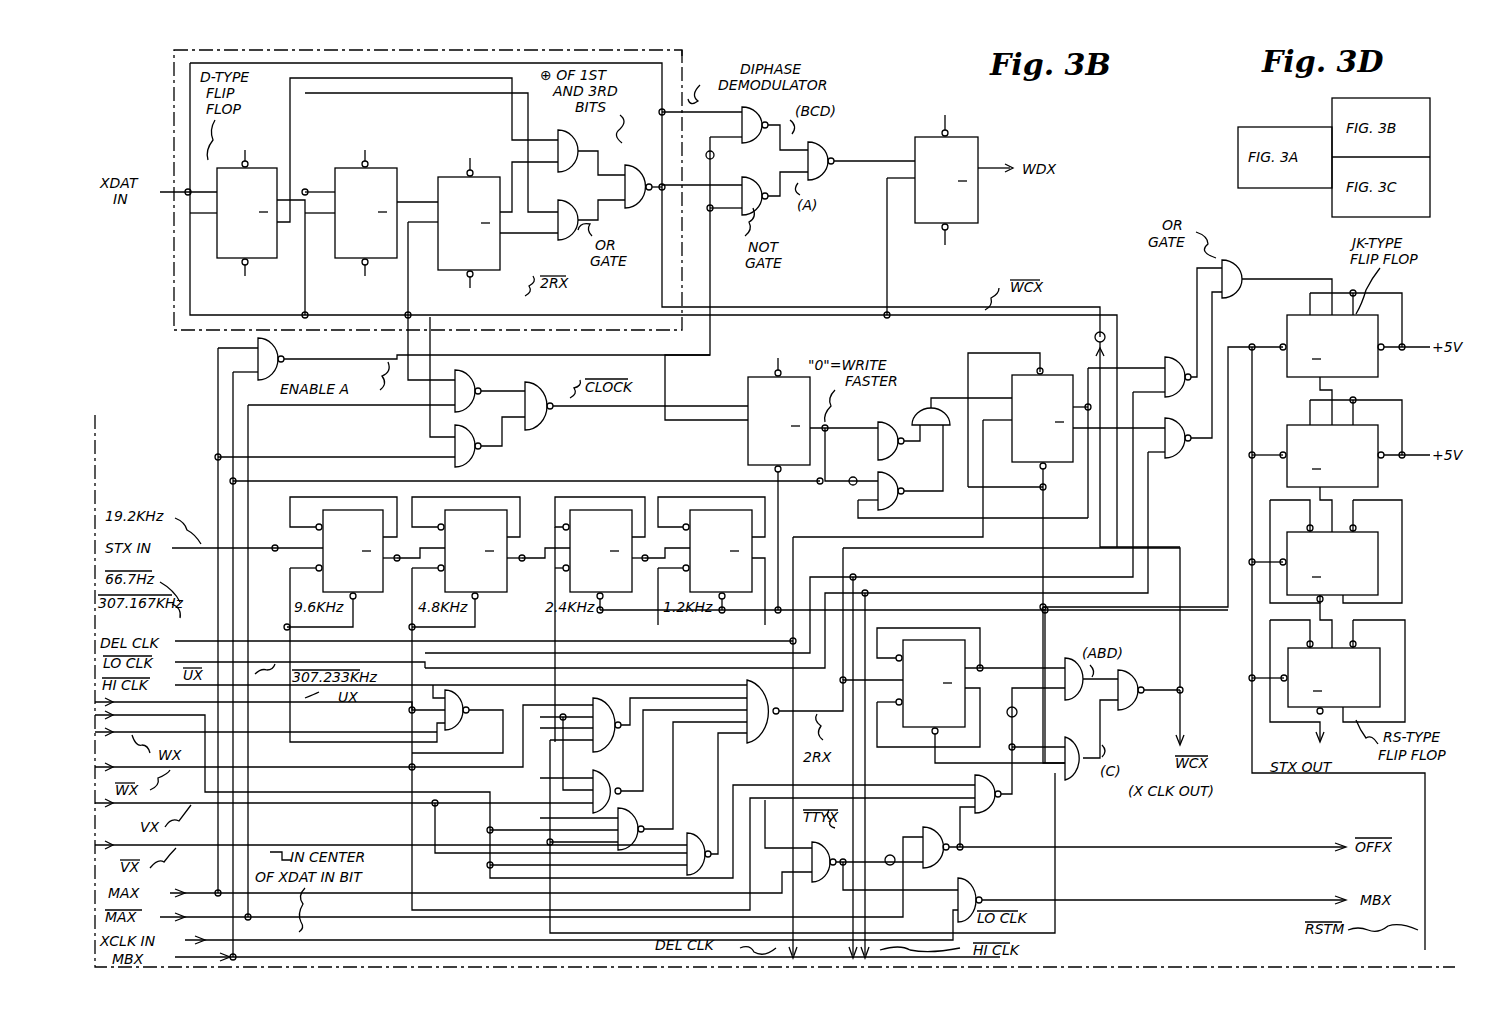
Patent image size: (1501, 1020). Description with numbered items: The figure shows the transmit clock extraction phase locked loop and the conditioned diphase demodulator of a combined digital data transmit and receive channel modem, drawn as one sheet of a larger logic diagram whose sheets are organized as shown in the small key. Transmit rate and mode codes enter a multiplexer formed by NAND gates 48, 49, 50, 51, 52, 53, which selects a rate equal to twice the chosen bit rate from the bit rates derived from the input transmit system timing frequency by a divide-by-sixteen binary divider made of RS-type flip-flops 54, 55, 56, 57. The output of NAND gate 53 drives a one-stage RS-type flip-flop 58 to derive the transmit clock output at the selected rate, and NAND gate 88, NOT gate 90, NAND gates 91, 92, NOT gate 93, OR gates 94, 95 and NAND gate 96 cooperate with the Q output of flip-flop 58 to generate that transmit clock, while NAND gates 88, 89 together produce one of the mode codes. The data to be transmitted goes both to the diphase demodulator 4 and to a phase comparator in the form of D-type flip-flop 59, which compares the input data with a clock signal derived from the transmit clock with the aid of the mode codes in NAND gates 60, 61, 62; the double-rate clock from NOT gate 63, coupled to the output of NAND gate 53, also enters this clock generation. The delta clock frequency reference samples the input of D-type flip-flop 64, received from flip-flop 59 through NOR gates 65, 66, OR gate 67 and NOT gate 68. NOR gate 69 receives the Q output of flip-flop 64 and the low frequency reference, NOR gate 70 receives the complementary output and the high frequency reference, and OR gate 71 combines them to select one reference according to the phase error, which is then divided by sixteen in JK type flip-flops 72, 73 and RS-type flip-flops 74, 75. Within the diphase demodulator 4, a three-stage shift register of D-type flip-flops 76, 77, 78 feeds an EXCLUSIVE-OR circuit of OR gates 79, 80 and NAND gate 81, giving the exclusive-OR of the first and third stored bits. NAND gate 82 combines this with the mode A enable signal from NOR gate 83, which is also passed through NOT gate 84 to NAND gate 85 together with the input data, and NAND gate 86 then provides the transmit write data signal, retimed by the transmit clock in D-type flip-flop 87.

The diphase demodulator 4 is at (682, 64).
The NAND gate 48 is at (458, 724).
The NAND gate 49 is at (614, 736).
The NAND gate 50 is at (608, 784).
The NAND gate 51 is at (628, 818).
The NAND gate 52 is at (694, 833).
The NAND gate 53 is at (764, 740).
The RS-type flip-flop 54 is at (350, 510).
The RS-type flip-flop 55 is at (478, 510).
The RS-type flip-flop 56 is at (595, 510).
The RS-type flip-flop 57 is at (716, 510).
The RS-type flip-flop 58 is at (966, 652).
The D-type flip-flop 59 is at (748, 380).
The NAND gate 60 is at (468, 372).
The NAND gate 61 is at (472, 430).
The NAND gate 62 is at (536, 384).
The NOT gate 63 is at (1094, 340).
The D-type flip-flop 64 is at (1062, 384).
The NOR gate 65 is at (880, 424).
The NOR gate 66 is at (902, 478).
The OR gate 67 is at (918, 414).
The NOT gate 68 is at (848, 484).
The NOR gate 69 is at (1174, 358).
The NOR gate 70 is at (1178, 428).
The OR gate 71 is at (1236, 298).
The JK type flip-flop 72 is at (1384, 362).
The JK type flip-flop 73 is at (1384, 472).
The RS-type flip-flop 74 is at (1360, 536).
The RS-type flip-flop 75 is at (1364, 652).
The D-type flip-flop 76 is at (222, 258).
The D-type flip-flop 77 is at (338, 258).
The D-type flip-flop 78 is at (440, 262).
The OR gate 79 is at (576, 150).
The OR gate 80 is at (570, 205).
The NAND gate 81 is at (648, 200).
The NAND gate 82 is at (766, 212).
The NOR gate 83 is at (278, 356).
The NOT gate 84 is at (708, 150).
The NAND gate 85 is at (758, 142).
The NAND gate 86 is at (834, 162).
The D-type flip-flop 87 is at (975, 145).
The NAND gate 88 is at (826, 882).
The NAND gate 89 is at (978, 892).
The NOT gate 90 is at (888, 852).
The NAND gate 91 is at (932, 832).
The NAND gate 92 is at (1000, 800).
The NOT gate 93 is at (1008, 709).
The OR gate 94 is at (1070, 662).
The OR gate 95 is at (1068, 740).
The NAND gate 96 is at (1140, 706).